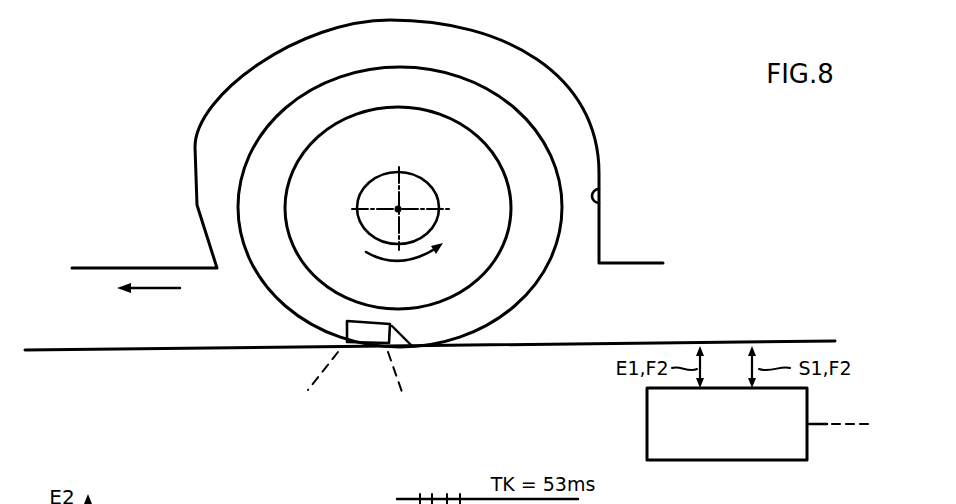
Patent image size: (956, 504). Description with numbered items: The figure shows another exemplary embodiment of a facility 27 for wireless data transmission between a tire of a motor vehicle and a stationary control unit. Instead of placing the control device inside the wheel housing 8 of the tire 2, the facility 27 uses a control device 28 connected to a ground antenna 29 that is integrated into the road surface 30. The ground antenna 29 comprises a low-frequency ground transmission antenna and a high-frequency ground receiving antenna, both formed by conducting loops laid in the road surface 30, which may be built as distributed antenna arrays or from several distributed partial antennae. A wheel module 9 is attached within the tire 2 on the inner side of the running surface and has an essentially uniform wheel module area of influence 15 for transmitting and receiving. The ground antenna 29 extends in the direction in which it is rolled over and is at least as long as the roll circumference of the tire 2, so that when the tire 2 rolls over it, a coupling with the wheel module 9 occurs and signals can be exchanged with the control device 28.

The tire 2 is at (537, 264).
The wheel housing 8 is at (604, 198).
The wheel module 9 is at (410, 346).
The wheel module area of influence 15 is at (328, 367).
The facility for wireless data transmission 27 is at (704, 168).
The control device 28 is at (612, 418).
The ground antenna 29 is at (574, 342).
The road surface 30 is at (72, 350).